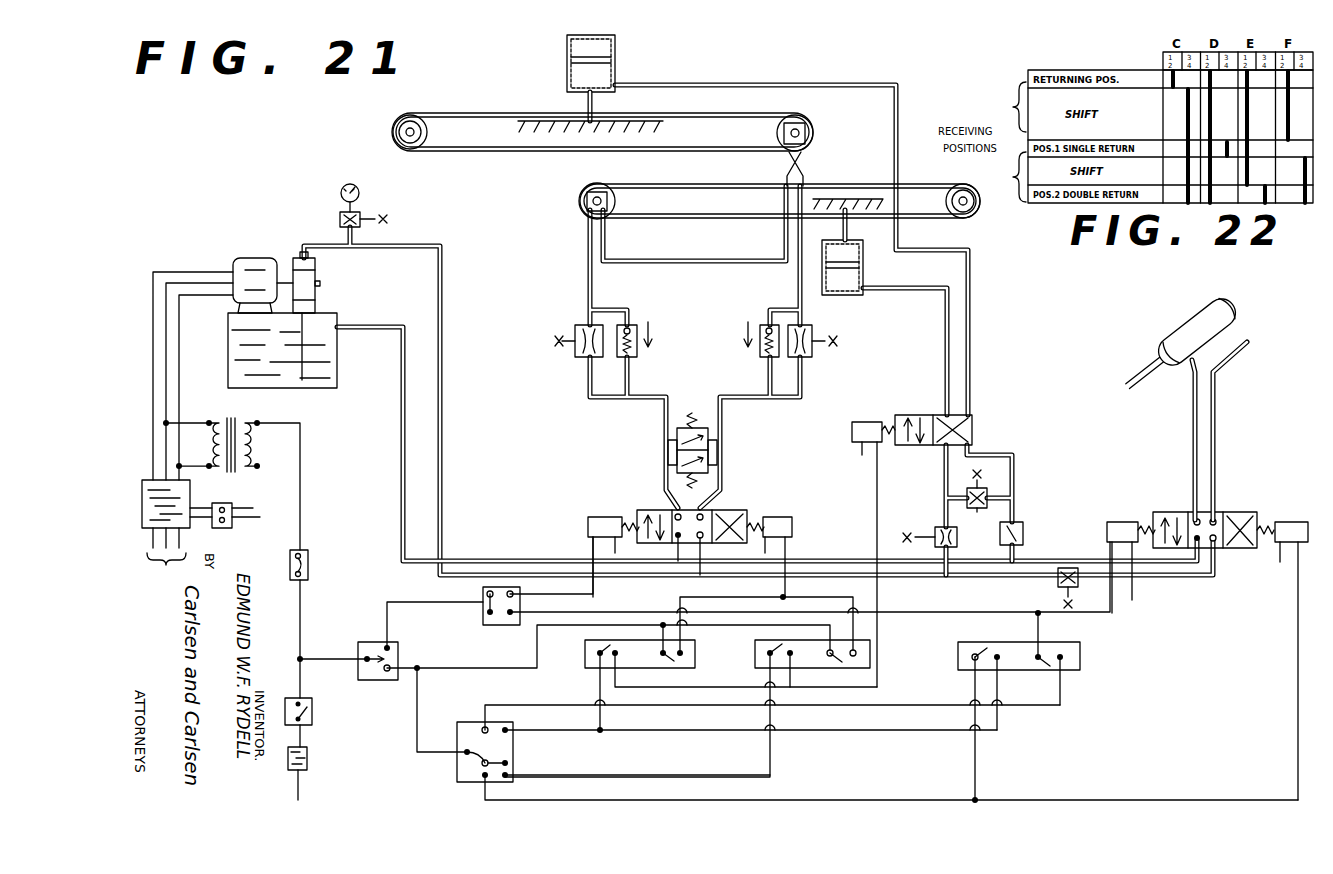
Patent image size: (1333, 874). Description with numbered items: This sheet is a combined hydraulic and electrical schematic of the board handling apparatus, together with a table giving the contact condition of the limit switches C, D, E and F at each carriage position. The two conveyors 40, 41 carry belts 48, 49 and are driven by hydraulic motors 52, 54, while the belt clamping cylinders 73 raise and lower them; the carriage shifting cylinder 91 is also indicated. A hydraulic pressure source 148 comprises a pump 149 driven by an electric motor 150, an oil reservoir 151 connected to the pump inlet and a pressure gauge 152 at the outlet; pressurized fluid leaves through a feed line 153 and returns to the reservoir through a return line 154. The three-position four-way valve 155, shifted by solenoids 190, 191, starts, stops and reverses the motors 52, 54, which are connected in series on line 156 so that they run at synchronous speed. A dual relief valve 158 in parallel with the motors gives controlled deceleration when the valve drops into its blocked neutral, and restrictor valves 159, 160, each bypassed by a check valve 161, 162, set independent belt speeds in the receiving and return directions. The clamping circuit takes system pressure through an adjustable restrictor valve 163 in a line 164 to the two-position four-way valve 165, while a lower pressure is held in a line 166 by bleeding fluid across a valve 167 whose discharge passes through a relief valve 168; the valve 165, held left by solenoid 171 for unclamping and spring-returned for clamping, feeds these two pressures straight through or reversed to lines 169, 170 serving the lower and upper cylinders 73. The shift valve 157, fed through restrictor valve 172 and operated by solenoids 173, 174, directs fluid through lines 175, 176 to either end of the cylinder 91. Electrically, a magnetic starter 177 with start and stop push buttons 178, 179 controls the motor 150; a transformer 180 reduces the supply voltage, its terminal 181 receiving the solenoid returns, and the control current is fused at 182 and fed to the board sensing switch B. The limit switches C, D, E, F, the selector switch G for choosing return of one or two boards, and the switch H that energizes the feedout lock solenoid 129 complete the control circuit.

The conveyor 40 is at (490, 134).
The conveyor 41 is at (768, 174).
The belt 48 is at (482, 113).
The belt 49 is at (665, 184).
The hydraulic motor 52 is at (585, 212).
The hydraulic motor 54 is at (812, 134).
The hydraulic cylinder 73 is at (615, 60).
The carriage shifting cylinder 91 is at (1185, 339).
The feedout lock solenoid 129 is at (307, 761).
The hydraulic pressure source 148 is at (250, 243).
The pump 149 is at (320, 284).
The electric motor 150 is at (247, 273).
The oil reservoir 151 is at (330, 363).
The fluid pressure gauge 152 is at (352, 183).
The feed line 153 is at (440, 345).
The hydraulic return line 154 is at (400, 438).
The valve 155 is at (653, 508).
The line 156 is at (743, 265).
The valve 157 is at (1180, 500).
The dual relief valve 158 is at (707, 427).
The restrictor valve 159 is at (575, 351).
The restrictor valve 160 is at (812, 357).
The check valve 161 is at (638, 354).
The check valve 162 is at (755, 355).
The adjustable restrictor valve 163 is at (940, 527).
The line 164 is at (946, 496).
The solenoid operated valve 165 is at (925, 415).
The line 166 is at (1015, 469).
The valve 167 is at (980, 510).
The relief valve 168 is at (1024, 528).
The line 169 is at (945, 355).
The line 170 is at (970, 366).
The solenoid 171 is at (852, 434).
The restrictor valve 172 is at (1056, 582).
The solenoid 173 is at (1120, 522).
The solenoid 174 is at (1273, 548).
The line 175 is at (1193, 425).
The line 176 is at (1216, 440).
The magnetic starter 177 is at (148, 480).
The start push button 178 is at (236, 508).
The stop push button 179 is at (224, 530).
The transformer 180 is at (239, 411).
The terminal 181 is at (262, 470).
The fuse 182 is at (308, 576).
The solenoid 190 is at (793, 526).
The solenoid 191 is at (588, 527).
The board sensing switch B is at (347, 655).
The limit switch C is at (476, 623).
The limit switch D is at (581, 668).
The limit switch E is at (750, 663).
The limit switch F is at (1083, 666).
The remote selector switch G is at (455, 768).
The switch H is at (312, 715).